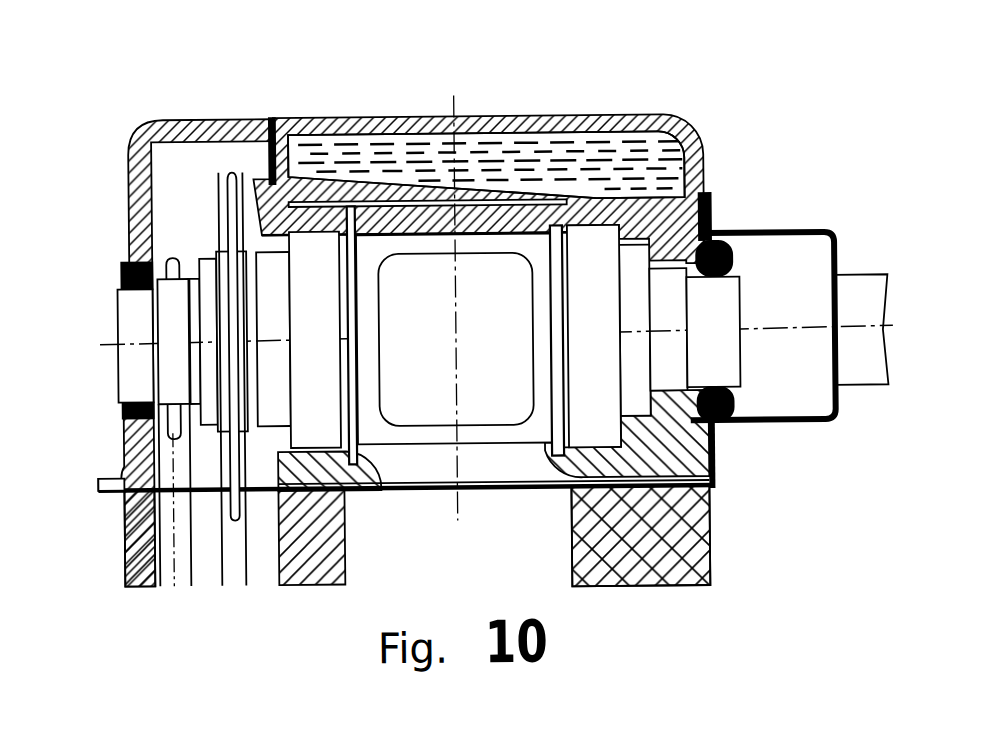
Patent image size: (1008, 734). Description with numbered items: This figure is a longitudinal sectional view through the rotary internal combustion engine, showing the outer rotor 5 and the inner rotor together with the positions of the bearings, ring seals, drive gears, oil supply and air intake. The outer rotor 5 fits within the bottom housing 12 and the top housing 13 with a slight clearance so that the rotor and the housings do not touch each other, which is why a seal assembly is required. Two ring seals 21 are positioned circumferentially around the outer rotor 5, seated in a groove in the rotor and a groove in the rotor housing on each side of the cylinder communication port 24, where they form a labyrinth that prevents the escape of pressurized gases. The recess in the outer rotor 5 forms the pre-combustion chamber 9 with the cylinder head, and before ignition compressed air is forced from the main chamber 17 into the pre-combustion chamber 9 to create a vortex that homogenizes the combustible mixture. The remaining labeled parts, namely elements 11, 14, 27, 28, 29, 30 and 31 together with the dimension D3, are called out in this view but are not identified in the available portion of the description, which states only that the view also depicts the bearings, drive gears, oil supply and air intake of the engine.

The outer rotor 5 is at (508, 250).
The pre-combustion chamber 9 is at (458, 280).
The bearing housing 11 is at (675, 117).
The bottom housing 12 is at (710, 482).
The top housing 13 is at (692, 149).
The retainer wall 14 is at (291, 128).
The main chamber 17 is at (500, 470).
The ring seals 21 is at (350, 220).
The cylinder communication port 24 is at (381, 452).
The bearing 27 is at (321, 266).
The bearing ring 28 is at (197, 269).
The end cap 29 is at (160, 259).
The pin 30 is at (227, 170).
The end cup 31 is at (773, 428).
The diameter D3 is at (600, 491).